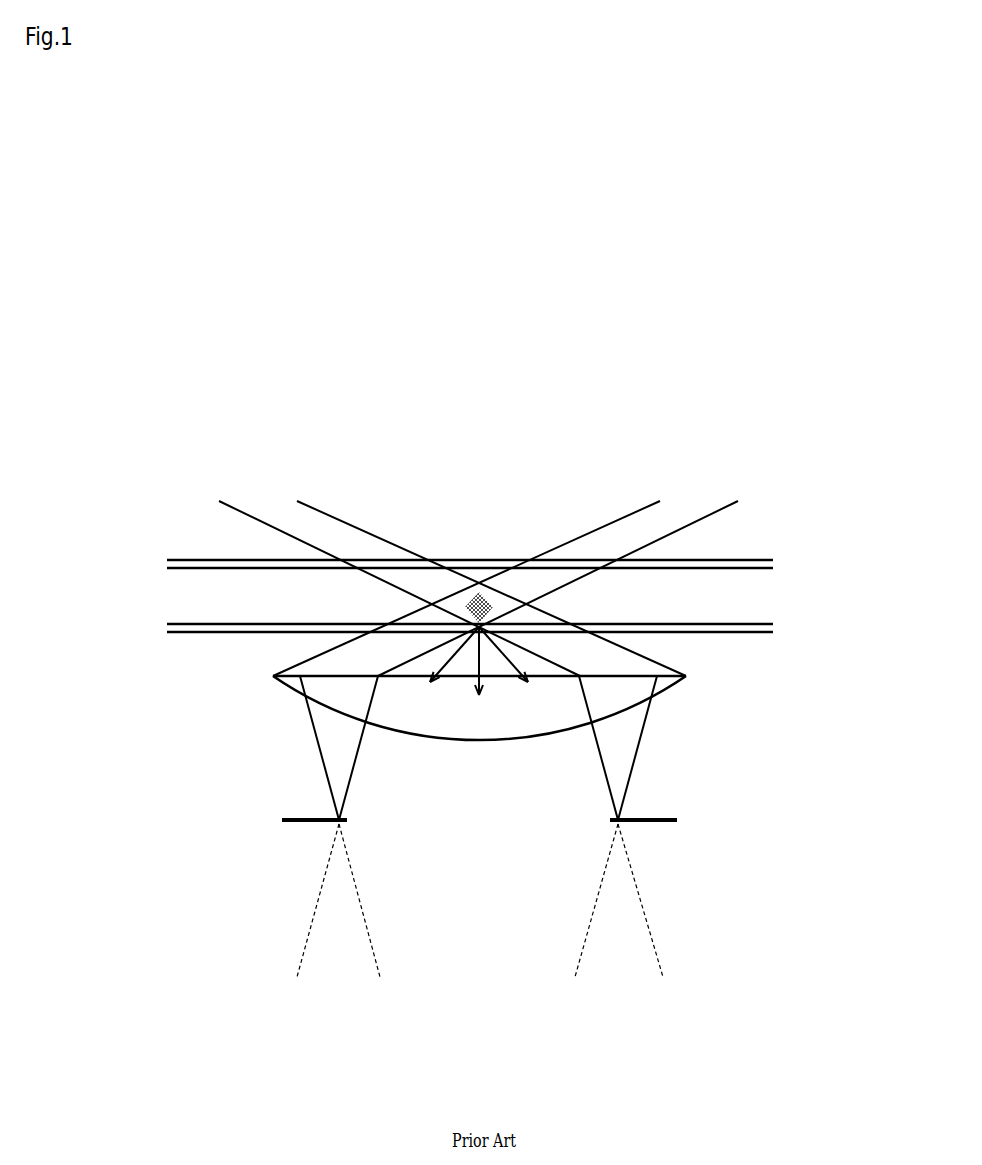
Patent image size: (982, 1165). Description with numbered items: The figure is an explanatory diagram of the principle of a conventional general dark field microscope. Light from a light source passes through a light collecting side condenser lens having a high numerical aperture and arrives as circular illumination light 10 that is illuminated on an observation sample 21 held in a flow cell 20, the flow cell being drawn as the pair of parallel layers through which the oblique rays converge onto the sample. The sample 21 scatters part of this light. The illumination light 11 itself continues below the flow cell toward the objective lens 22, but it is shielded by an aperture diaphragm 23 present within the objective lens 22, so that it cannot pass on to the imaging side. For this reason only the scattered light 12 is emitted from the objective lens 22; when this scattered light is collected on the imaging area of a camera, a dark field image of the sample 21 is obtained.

The circular illumination light 10 is at (677, 518).
The illumination light 11 is at (622, 736).
The scattered light 12 is at (489, 698).
The flow cell 20 is at (193, 595).
The observation sample 21 is at (479, 586).
The objective lens 22 is at (293, 687).
The aperture diaphragm 23 is at (302, 826).